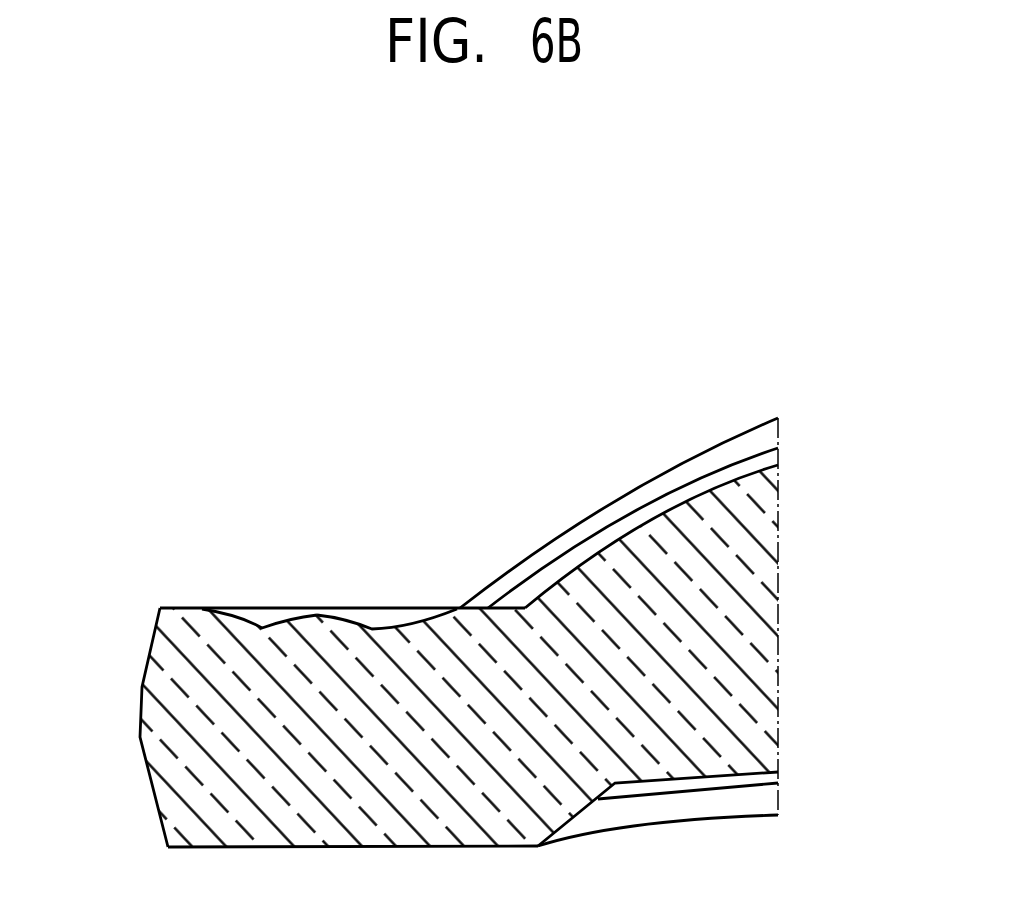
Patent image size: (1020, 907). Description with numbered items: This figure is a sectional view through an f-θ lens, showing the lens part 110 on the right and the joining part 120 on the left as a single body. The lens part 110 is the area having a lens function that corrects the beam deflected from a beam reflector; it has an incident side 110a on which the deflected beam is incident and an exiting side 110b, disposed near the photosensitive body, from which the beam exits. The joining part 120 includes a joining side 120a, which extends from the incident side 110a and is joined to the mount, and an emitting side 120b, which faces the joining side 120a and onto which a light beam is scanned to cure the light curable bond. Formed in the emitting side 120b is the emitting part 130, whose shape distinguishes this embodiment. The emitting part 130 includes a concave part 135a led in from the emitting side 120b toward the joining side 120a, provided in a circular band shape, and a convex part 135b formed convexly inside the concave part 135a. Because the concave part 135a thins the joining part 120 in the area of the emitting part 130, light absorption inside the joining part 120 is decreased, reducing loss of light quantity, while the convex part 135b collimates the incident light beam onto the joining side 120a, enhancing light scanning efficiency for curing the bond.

The lens part 110 is at (670, 662).
The incident side 110a is at (538, 861).
The exiting side 110b is at (697, 502).
The joining part 120 is at (538, 861).
The joining side 120a is at (203, 848).
The emitting side 120b is at (175, 608).
The emitting part 130 is at (329, 564).
The concave part 135a is at (237, 618).
The convex part 135b is at (387, 587).